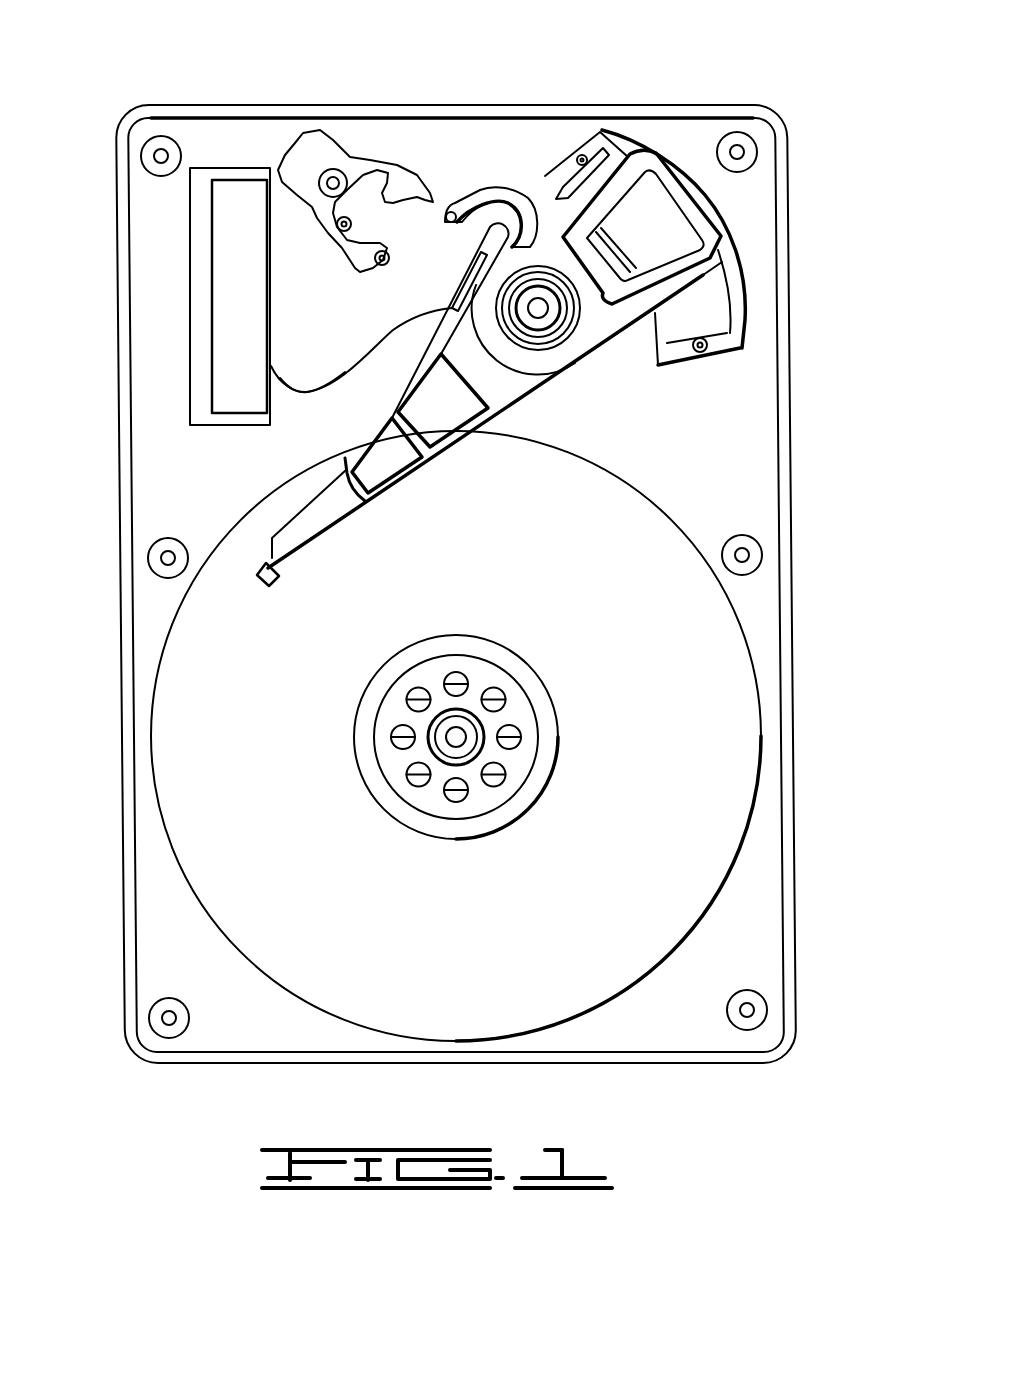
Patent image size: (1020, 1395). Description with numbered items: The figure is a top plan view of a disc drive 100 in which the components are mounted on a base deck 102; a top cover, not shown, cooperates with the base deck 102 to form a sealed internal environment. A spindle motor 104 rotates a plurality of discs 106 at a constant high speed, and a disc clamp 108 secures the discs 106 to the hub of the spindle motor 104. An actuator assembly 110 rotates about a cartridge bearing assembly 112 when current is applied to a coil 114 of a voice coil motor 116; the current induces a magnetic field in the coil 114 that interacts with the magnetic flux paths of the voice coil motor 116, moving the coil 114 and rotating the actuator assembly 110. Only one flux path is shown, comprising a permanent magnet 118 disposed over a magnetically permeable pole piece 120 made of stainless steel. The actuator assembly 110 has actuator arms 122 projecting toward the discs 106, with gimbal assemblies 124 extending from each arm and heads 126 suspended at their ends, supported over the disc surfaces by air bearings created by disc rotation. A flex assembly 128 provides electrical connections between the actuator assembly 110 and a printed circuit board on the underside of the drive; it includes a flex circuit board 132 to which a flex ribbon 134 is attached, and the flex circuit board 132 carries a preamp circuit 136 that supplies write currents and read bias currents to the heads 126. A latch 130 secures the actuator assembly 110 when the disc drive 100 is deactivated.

The disc drive 100 is at (185, 87).
The base deck 102 is at (172, 500).
The spindle motor 104 is at (463, 741).
The discs 106 is at (736, 740).
The disc clamp 108 is at (395, 765).
The actuator assembly 110 is at (522, 391).
The cartridge bearing assembly 112 is at (543, 316).
The coil 114 is at (707, 228).
The voice coil motor 116 is at (652, 123).
The permanent magnet 118 is at (708, 300).
The pole piece 120 is at (727, 347).
The actuator arms 122 is at (432, 440).
The gimbal assemblies 124 is at (308, 534).
The heads 126 is at (264, 583).
The flex assembly 128 is at (318, 392).
The latch 130 is at (313, 157).
The flex circuit board 132 is at (393, 330).
The flex ribbon 134 is at (306, 389).
The preamp circuit 136 is at (460, 283).